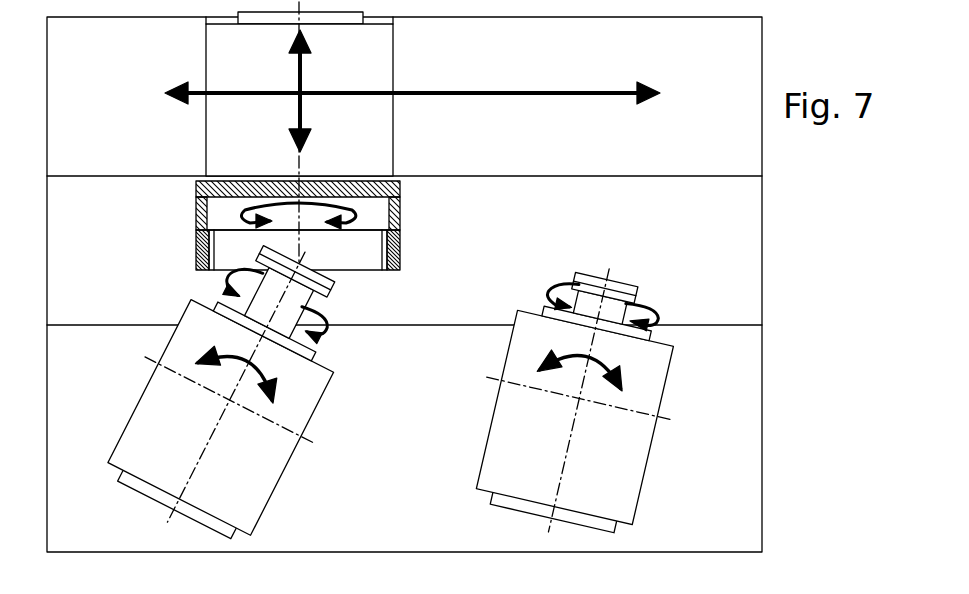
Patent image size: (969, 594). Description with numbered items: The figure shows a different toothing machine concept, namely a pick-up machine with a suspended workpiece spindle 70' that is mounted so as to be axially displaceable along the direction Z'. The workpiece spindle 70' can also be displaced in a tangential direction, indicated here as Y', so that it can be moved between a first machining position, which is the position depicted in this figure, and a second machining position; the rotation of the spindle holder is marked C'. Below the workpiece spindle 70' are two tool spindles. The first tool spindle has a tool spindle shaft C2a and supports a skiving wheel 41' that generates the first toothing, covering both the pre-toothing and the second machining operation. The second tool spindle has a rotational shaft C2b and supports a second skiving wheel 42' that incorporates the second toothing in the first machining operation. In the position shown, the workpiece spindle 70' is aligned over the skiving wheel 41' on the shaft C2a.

The suspended workpiece spindle 70' is at (363, 137).
The axial displacement direction Z' is at (331, 91).
The horizontal Y' axis of movement Y' is at (412, 116).
The C' rotational axis of holder C' is at (314, 214).
The skiving wheel 41' is at (288, 387).
The tool spindle shaft C2a is at (303, 302).
The second skiving wheel 42' is at (588, 385).
The rotational shaft C2b is at (628, 305).